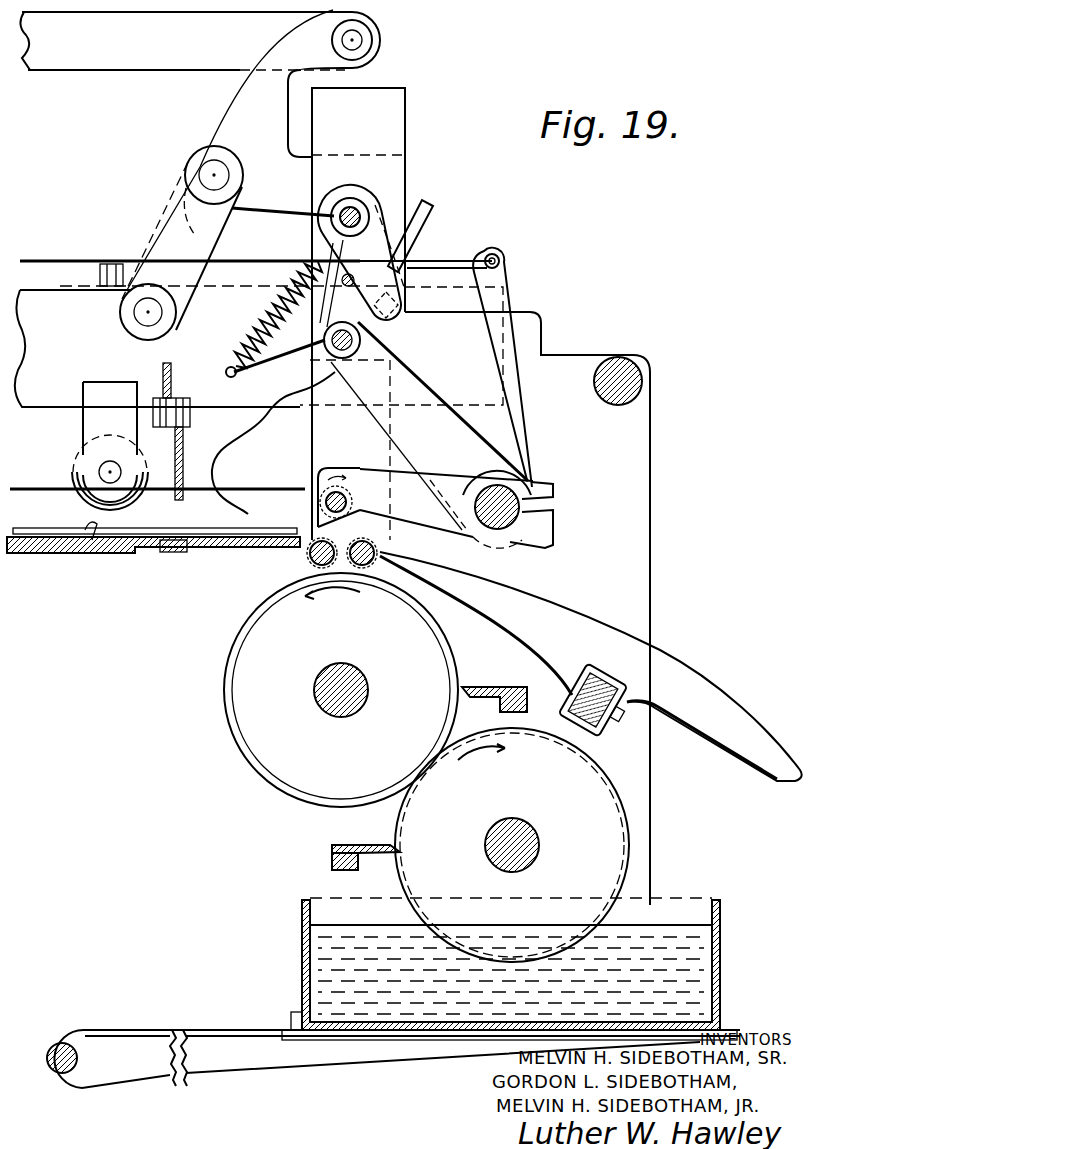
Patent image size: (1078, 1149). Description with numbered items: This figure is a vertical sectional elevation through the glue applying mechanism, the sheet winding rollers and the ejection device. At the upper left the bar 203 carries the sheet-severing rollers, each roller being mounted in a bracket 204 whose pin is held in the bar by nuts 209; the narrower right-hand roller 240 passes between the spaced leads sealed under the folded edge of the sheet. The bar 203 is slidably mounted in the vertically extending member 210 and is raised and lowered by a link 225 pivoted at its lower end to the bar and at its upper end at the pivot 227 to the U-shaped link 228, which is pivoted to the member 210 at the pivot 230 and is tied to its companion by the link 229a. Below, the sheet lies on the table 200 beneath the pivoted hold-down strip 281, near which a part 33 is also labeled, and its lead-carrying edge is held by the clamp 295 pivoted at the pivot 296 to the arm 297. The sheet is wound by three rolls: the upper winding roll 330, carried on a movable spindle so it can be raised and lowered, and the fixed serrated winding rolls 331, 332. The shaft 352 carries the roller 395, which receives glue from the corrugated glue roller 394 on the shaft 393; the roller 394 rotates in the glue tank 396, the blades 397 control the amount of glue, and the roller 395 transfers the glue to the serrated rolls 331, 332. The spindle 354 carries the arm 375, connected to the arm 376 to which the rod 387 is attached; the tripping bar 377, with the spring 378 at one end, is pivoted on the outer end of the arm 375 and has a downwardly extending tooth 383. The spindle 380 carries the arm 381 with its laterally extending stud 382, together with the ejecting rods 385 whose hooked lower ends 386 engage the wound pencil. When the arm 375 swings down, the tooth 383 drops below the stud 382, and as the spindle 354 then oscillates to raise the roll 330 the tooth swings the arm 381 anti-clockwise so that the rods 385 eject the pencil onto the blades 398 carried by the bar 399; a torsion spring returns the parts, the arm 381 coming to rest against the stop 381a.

The U-shaped link 228 is at (272, 40).
The link 229a is at (125, 58).
The vertically extending member 210 is at (395, 100).
The pivot 227 is at (205, 165).
The link 225 is at (168, 222).
The nuts 209 is at (107, 277).
The bar 203 is at (47, 300).
The rod 387 is at (58, 262).
The bracket 204 is at (98, 402).
The roller 240 is at (77, 463).
The arm 297 is at (173, 362).
The pivot 296 is at (152, 395).
The clamp 295 is at (185, 437).
The stop 381a is at (305, 272).
The spring 378 is at (272, 314).
The ejecting member or rod 385 is at (300, 385).
The hooked lower end 386 is at (238, 462).
The pivot 230 is at (355, 178).
The spindle 380 is at (360, 217).
The arm 381 is at (330, 237).
The stud 382 is at (400, 317).
The tripping bar 377 is at (428, 208).
The tooth 383 is at (427, 246).
The arm 376 is at (510, 417).
The winding roll 330 is at (325, 508).
The arm 375 is at (407, 422).
The spindle 354 is at (548, 498).
The winding roll 331 is at (312, 566).
The winding roll 332 is at (380, 557).
The roller 395 is at (287, 757).
The shaft 352 is at (385, 648).
The corrugated glue roller 394 is at (597, 832).
The shaft 393 is at (510, 830).
The blade 397 is at (500, 678).
The blade 398 is at (585, 630).
The bar 399 is at (613, 682).
The glue tank 396 is at (710, 888).
The longitudinally extending strip 281 is at (53, 500).
The hook 33 is at (92, 540).
The table 200 is at (118, 555).